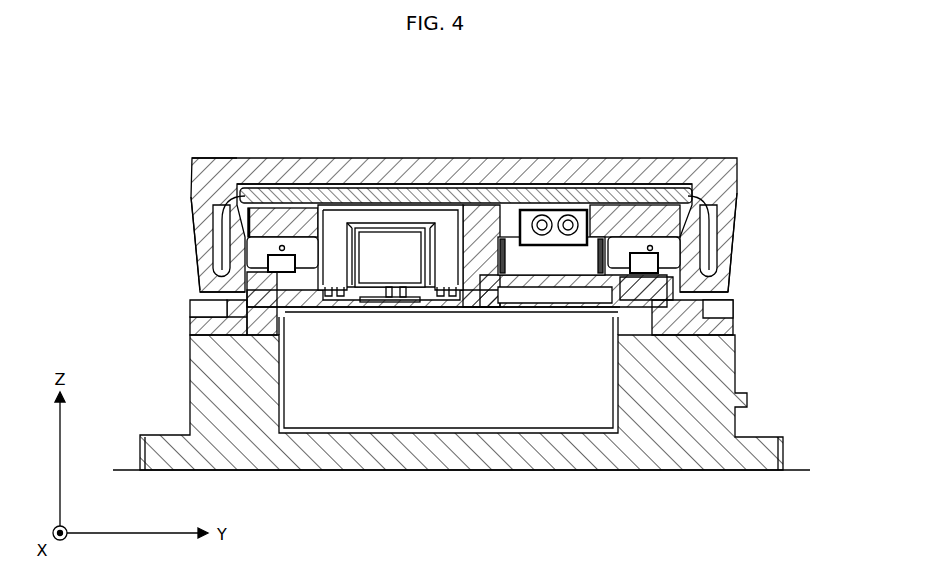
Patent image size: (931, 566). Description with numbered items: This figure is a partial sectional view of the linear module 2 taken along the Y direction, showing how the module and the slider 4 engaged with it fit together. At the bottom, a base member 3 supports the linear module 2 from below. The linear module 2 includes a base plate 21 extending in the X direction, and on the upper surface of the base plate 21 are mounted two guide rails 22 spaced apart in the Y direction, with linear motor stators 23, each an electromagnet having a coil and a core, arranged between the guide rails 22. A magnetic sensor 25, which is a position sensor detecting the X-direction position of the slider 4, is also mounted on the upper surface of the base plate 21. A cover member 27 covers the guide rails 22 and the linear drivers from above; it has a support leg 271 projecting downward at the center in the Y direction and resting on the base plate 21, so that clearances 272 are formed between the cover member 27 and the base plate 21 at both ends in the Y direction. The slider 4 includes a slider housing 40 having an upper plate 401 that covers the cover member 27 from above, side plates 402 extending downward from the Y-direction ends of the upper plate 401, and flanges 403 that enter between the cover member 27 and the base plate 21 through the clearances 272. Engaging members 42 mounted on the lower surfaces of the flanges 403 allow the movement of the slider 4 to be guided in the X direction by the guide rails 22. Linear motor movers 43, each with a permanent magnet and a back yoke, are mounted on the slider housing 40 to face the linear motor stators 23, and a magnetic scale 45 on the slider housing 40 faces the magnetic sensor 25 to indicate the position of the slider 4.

The linear module 2 is at (726, 124).
The base member 3 is at (717, 378).
The slider 4 is at (735, 172).
The base plate 21 is at (672, 312).
The guide rail 22 is at (285, 263).
The linear motor stator 23 is at (398, 272).
The magnetic sensor 25 is at (553, 262).
The cover member 27 is at (355, 197).
The slider housing 40 is at (192, 158).
The engaging member 42 is at (262, 238).
The linear motor mover 43 is at (389, 218).
The magnetic scale 45 is at (553, 215).
The support leg 271 is at (483, 270).
The clearance 272 is at (188, 297).
The upper plate 401 is at (478, 168).
The side plate 402 is at (197, 212).
The flange 403 is at (291, 223).